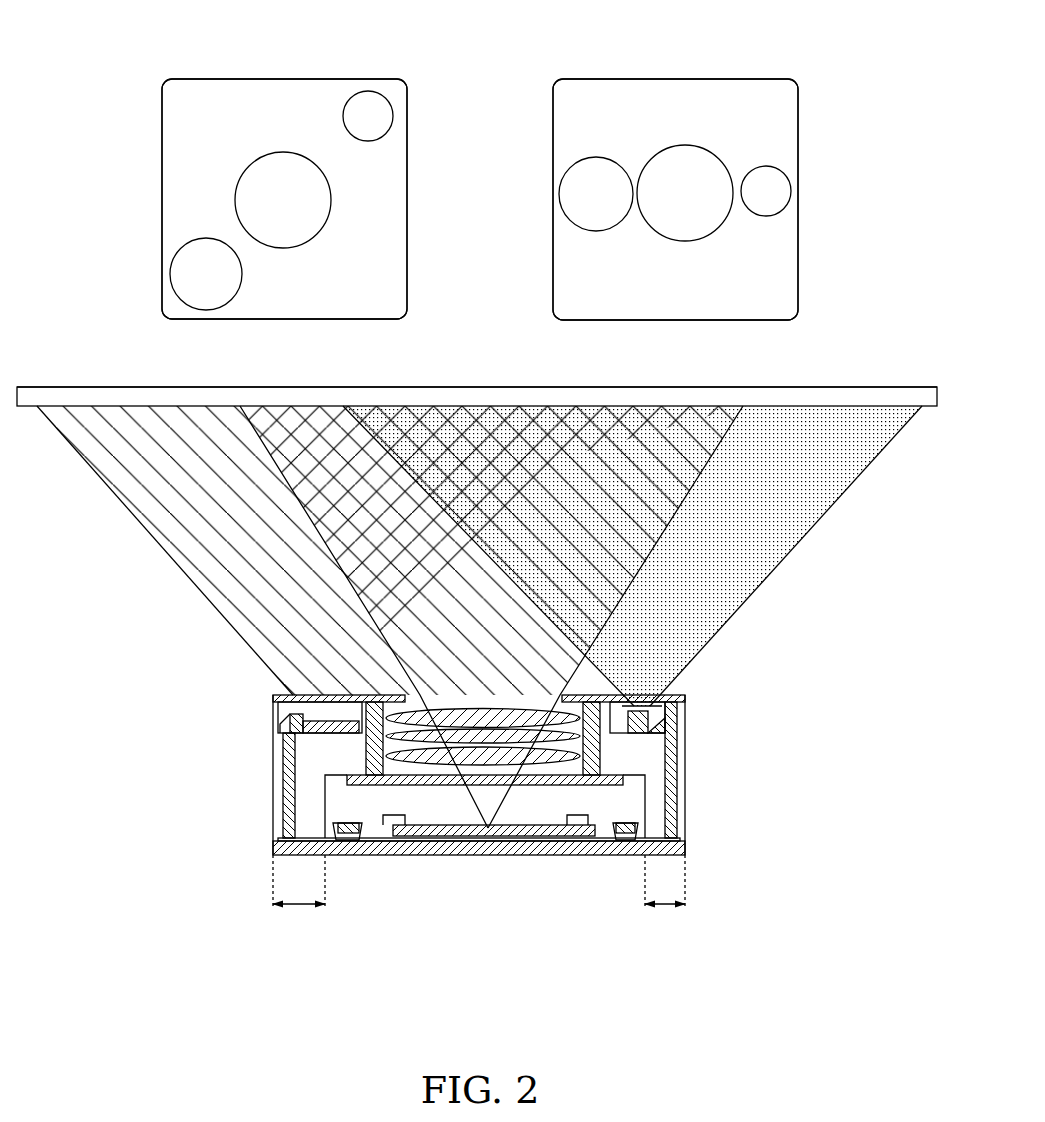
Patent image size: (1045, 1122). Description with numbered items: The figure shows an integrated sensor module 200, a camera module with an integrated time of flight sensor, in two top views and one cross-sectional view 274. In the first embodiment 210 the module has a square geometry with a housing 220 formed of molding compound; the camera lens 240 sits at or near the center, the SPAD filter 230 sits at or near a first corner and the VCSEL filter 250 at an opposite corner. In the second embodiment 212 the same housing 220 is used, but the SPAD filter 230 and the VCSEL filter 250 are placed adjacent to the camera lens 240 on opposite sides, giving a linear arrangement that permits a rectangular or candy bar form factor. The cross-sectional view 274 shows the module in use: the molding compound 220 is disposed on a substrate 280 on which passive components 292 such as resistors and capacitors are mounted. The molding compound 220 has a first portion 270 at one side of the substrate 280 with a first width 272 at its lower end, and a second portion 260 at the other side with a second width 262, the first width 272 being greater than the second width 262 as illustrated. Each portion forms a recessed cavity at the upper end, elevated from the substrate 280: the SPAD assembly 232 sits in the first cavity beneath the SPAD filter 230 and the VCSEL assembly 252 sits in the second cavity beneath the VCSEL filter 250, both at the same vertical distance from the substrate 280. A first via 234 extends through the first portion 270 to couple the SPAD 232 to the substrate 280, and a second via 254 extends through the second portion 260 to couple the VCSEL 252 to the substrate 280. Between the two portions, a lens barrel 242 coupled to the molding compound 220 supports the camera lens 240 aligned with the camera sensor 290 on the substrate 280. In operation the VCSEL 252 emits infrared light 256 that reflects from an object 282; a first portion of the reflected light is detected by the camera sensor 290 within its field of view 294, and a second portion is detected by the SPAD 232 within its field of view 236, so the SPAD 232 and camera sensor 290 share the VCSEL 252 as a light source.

The integrated sensor module 200 is at (765, 680).
The first embodiment 210 is at (335, 60).
The second embodiment 212 is at (750, 60).
The housing 220 is at (178, 127).
The SPAD filter 230 is at (172, 272).
The SPAD assembly 232 is at (288, 708).
The first via 234 is at (284, 742).
The field of view 236 is at (194, 552).
The camera lens 240 is at (330, 195).
The lens barrel 242 is at (590, 700).
The VCSEL filter 250 is at (393, 112).
The VCSEL assembly 252 is at (668, 703).
The second via 254 is at (683, 740).
The infrared light 256 is at (790, 520).
The second portion 260 is at (688, 784).
The second width 262 is at (666, 905).
The first portion 270 is at (275, 782).
The first width 272 is at (298, 905).
The cross-sectional view 274 is at (842, 362).
The substrate 280 is at (275, 846).
The object 282 is at (432, 385).
The camera sensor 290 is at (485, 840).
The passive components 292 is at (349, 842).
The field of view 294 is at (541, 418).